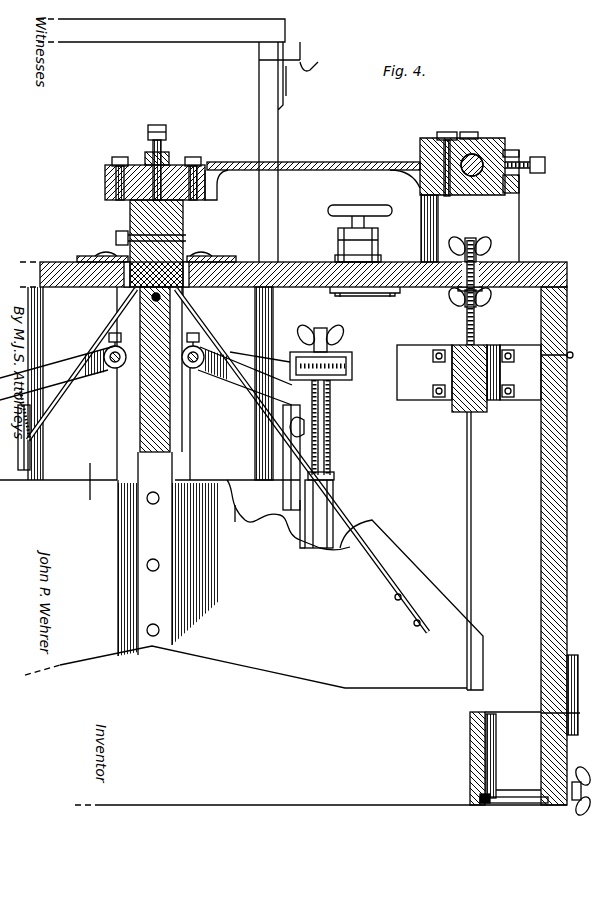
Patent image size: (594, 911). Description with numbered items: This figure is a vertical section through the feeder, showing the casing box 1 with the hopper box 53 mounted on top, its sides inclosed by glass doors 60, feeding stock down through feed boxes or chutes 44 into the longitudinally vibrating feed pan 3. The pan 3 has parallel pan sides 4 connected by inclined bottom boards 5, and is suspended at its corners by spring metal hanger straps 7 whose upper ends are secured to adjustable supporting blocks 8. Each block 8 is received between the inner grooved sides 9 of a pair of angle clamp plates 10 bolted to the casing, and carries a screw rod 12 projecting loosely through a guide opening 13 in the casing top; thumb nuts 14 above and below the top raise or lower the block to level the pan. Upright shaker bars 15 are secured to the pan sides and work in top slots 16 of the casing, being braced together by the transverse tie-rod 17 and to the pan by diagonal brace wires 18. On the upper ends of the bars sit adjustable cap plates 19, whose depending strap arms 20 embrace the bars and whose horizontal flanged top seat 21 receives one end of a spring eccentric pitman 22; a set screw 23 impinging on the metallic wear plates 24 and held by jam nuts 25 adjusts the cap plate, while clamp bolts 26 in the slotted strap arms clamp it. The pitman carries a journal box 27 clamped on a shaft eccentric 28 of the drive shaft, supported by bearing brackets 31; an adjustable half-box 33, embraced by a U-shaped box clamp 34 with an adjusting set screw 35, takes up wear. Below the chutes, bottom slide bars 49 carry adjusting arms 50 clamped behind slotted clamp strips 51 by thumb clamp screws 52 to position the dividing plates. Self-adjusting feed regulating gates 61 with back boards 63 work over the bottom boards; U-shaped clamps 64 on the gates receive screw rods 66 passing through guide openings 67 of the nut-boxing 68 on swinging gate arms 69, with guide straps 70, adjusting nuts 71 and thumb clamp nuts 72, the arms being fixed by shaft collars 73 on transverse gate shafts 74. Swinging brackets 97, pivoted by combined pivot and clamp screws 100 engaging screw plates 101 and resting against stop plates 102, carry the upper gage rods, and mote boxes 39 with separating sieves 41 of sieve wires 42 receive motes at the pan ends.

The casing box 1 is at (321, 764).
The feed pan 3 is at (391, 605).
The pan sides 4 is at (87, 655).
The inclined bottom boards 5 is at (489, 403).
The spring metal hanger straps 7 is at (473, 548).
The adjustable supporting blocks 8 is at (304, 274).
The inner grooved sides 9 is at (450, 405).
The angle clamp plates 10 is at (410, 400).
The screw rods 12 is at (477, 328).
The guide openings 13 is at (458, 292).
The thumb nuts 14 is at (488, 243).
The upright shaker bars 15 is at (172, 423).
The top slots 16 is at (188, 290).
The transverse tie-rod 17 is at (152, 297).
The diagonal brace wires 18 is at (46, 410).
The adjustable cap plates 19 is at (130, 200).
The depending strap arms 20 is at (185, 225).
The horizontal flanged top seat 21 is at (218, 195).
The spring eccentric pitmen 22 is at (350, 162).
The set screw 23 is at (165, 142).
The metallic wear plates 24 is at (130, 230).
The jam nuts 25 is at (172, 159).
The clamp bolts 26 is at (113, 178).
The journal boxes 27 is at (425, 150).
The shaft eccentrics 28 is at (512, 185).
The bearing brackets 31 is at (523, 213).
The adjustable half-box 33 is at (500, 140).
The U-shaped box clamp 34 is at (449, 132).
The adjusting set screw 35 is at (548, 164).
The mote boxes 39 is at (486, 744).
The separating sieve 41 is at (485, 796).
The sieve wires 42 is at (508, 797).
The feed boxes or chutes 44 is at (150, 498).
The bottom slide bars 49 is at (267, 513).
The adjusting arms 50 is at (30, 470).
The slotted clamp strips 51 is at (24, 395).
The thumb clamp screws 52 is at (304, 427).
The hopper box 53 is at (161, 52).
The glass doors 60 is at (282, 140).
The self-adjusting feed regulating gates 61 is at (320, 518).
The back boards 63 is at (333, 492).
The U-shaped clamps 64 is at (335, 474).
The screw rods 66 is at (331, 406).
The guide openings 67 is at (333, 352).
The nut-boxing 68 is at (353, 367).
The swinging gate arms 69 is at (90, 360).
The guide straps 70 is at (331, 449).
The adjusting nuts 71 is at (290, 356).
The thumb clamp nuts 72 is at (318, 331).
The shaft collars 73 is at (202, 346).
The transverse gate shafts 74 is at (118, 369).
The swinging brackets 97 is at (340, 238).
The combined pivot and clamp screws 100 is at (372, 232).
The screw plates 101 is at (378, 291).
The stop plates 102 is at (338, 258).